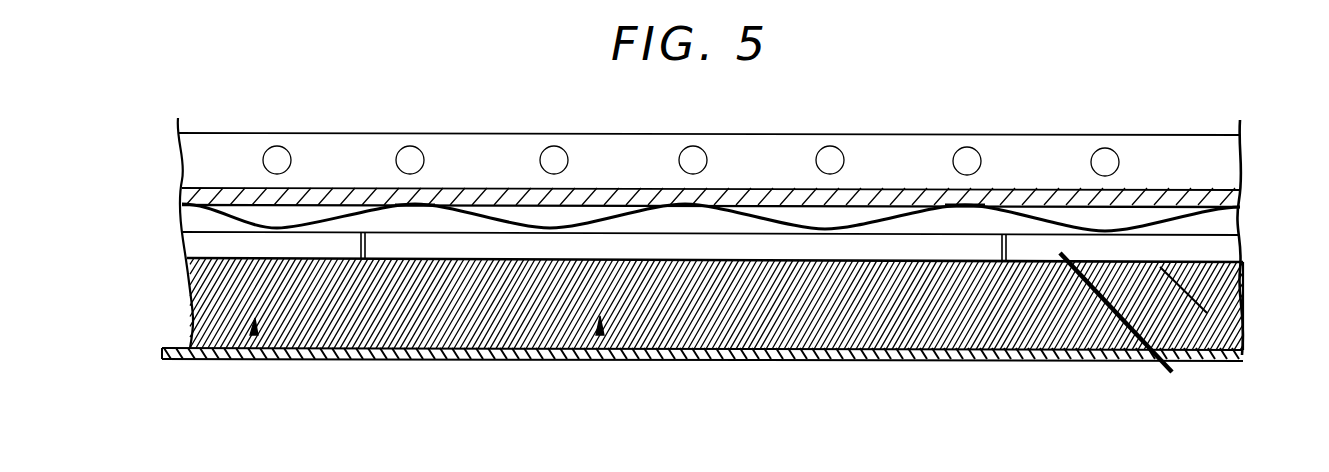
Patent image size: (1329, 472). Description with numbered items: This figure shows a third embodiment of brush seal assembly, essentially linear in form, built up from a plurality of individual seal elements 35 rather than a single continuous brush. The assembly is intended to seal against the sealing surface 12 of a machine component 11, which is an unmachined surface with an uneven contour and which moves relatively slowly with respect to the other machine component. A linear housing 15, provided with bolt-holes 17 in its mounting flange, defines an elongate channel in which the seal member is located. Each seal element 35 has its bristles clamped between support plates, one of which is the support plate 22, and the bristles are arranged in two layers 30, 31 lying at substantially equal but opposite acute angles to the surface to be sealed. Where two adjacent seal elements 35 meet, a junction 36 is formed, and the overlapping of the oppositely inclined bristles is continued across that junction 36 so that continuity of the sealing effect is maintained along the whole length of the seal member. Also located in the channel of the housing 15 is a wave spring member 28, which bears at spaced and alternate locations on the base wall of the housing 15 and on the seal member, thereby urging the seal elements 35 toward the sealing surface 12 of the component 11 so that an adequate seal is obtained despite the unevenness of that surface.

The machine component 11 is at (347, 360).
The sealing surface 12 is at (175, 347).
The housing 15 is at (356, 147).
The bolt-holes 17 is at (960, 150).
The support plate 22 is at (1222, 247).
The wave spring member 28 is at (1063, 227).
The bristle layer 30 is at (197, 360).
The bristle layer 31 is at (1198, 320).
The seal element 35 is at (252, 330).
The junction 36 is at (375, 223).